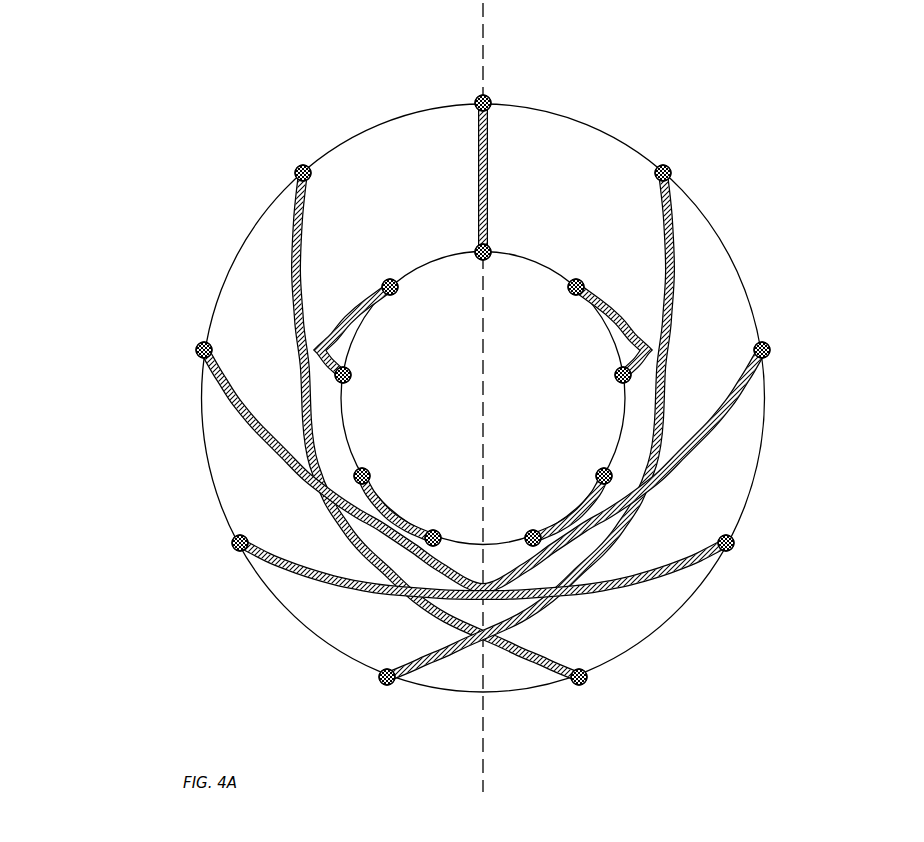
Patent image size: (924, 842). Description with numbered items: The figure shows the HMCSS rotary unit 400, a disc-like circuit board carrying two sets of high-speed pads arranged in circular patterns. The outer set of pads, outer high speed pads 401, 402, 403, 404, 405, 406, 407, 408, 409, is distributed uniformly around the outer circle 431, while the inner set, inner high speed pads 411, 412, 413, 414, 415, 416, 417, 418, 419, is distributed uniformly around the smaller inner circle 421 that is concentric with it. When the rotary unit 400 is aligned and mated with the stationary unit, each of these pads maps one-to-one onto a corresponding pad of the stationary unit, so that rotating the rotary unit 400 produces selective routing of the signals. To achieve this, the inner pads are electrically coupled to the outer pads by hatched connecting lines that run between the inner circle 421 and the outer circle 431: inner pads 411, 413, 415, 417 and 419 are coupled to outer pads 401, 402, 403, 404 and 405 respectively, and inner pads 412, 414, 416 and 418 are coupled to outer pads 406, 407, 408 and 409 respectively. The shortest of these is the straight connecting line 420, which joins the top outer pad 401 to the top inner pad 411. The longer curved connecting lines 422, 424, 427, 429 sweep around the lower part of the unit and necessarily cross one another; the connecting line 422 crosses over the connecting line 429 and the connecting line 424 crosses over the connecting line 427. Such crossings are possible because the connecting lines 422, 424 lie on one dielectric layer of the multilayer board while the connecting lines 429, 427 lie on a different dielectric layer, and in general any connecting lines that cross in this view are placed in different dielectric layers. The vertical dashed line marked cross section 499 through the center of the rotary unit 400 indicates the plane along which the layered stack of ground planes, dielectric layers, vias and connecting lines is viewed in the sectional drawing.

The HMCSS rotary unit 400 is at (493, 410).
The outer high speed pad 401 is at (490, 98).
The outer high speed pad 402 is at (312, 178).
The outer high speed pad 403 is at (202, 343).
The outer high speed pad 404 is at (233, 541).
The outer high speed pad 405 is at (380, 684).
The outer high speed pad 406 is at (587, 684).
The outer high speed pad 407 is at (735, 541).
The outer high speed pad 408 is at (770, 355).
The outer high speed pad 409 is at (672, 176).
The inner high speed pad 411 is at (492, 248).
The inner high speed pad 412 is at (396, 294).
The inner high speed pad 413 is at (352, 375).
The inner high speed pad 414 is at (368, 470).
The inner high speed pad 415 is at (436, 530).
The inner high speed pad 416 is at (531, 530).
The inner high speed pad 417 is at (598, 470).
The inner high speed pad 418 is at (618, 382).
The inner high speed pad 419 is at (569, 287).
The connecting line 420 is at (478, 120).
The inner circle 421 is at (590, 315).
The connecting line 422 is at (545, 625).
The connecting line 424 is at (662, 576).
The connecting line 427 is at (300, 572).
The connecting line 429 is at (423, 653).
The outer circle 431 is at (576, 128).
The cross section 499 is at (483, 12).